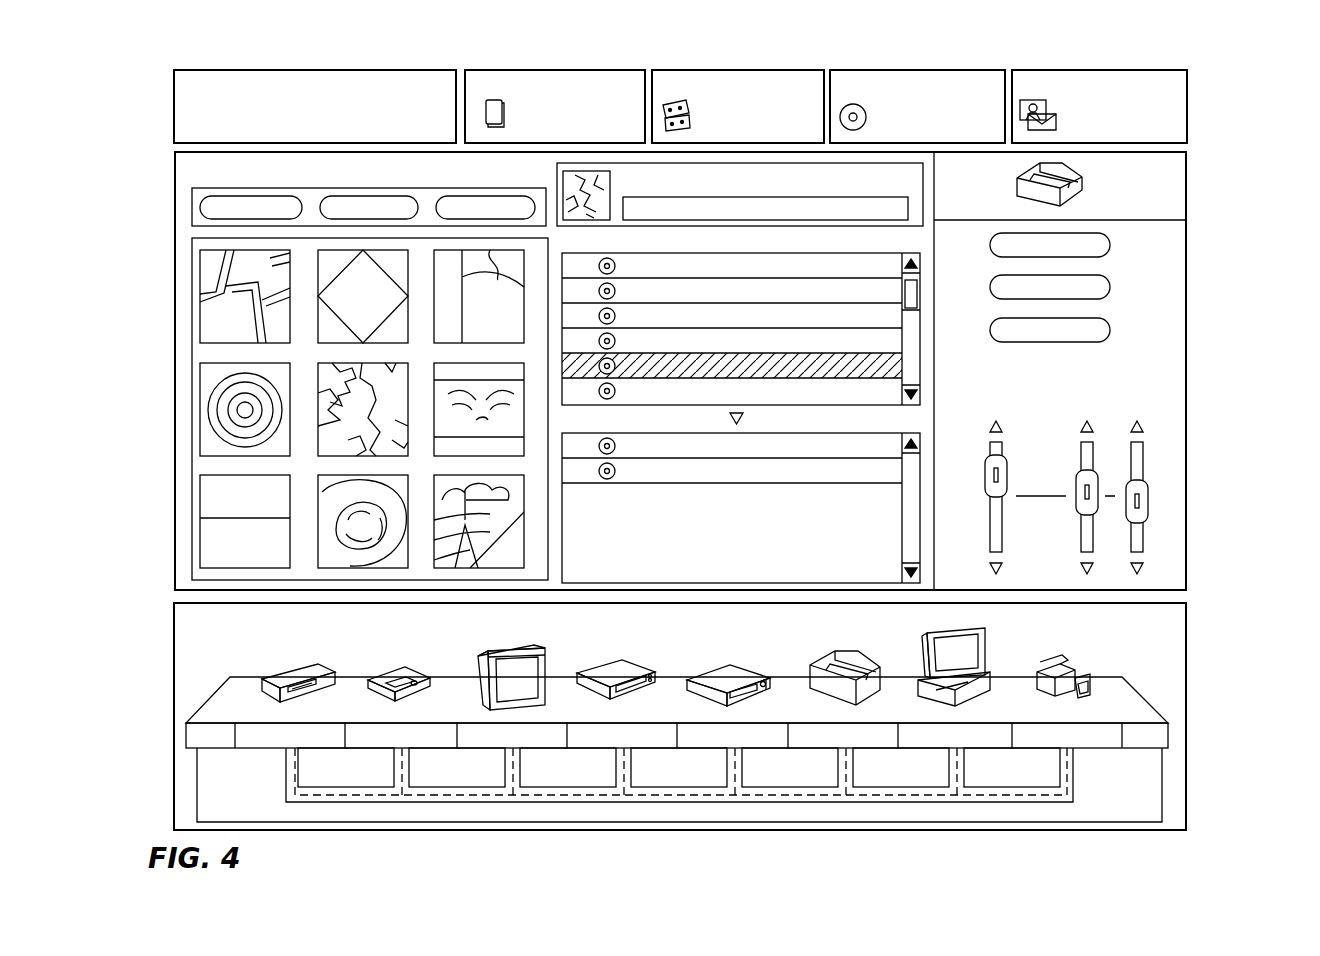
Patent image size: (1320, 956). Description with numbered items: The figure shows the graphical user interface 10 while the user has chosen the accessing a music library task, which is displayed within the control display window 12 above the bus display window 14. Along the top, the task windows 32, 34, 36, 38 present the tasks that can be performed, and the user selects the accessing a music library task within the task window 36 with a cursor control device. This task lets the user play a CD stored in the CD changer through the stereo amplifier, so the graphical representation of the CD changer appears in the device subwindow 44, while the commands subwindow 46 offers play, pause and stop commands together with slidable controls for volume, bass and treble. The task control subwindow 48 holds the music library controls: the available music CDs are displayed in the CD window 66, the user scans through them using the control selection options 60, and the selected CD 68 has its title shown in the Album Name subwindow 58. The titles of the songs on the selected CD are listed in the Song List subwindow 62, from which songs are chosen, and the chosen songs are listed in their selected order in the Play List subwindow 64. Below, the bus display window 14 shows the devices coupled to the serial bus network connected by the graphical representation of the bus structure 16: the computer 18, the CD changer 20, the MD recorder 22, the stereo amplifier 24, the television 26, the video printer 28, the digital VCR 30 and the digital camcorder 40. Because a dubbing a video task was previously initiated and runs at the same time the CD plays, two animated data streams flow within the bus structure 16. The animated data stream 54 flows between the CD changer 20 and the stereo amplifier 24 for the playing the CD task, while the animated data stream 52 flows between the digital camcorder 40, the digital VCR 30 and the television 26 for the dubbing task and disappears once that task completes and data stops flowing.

The graphical user interface 10 is at (1228, 132).
The control display window 12 is at (1187, 322).
The bus display window 14 is at (1148, 700).
The bus structure 16 is at (920, 803).
The computer 18 is at (990, 644).
The compact disk changer 20 is at (855, 660).
The magnetic disk recorder 22 is at (745, 666).
The stereo amplifier 24 is at (630, 660).
The television 26 is at (541, 660).
The video printer 28 is at (408, 668).
The digital video cassette recorder 30 is at (316, 666).
The task window 32 is at (556, 69).
The task window 34 is at (740, 69).
The task window 36 is at (922, 69).
The task window 38 is at (1092, 69).
The digital camcorder 40 is at (1070, 670).
The device subwindow 44 is at (1175, 187).
The commands subwindow 46 is at (1167, 448).
The task control subwindow 48 is at (172, 412).
The animated data stream 52 is at (1046, 800).
The animated data stream 54 is at (773, 796).
The Album Name subwindow 58 is at (558, 163).
The control selection options 60 is at (438, 188).
The Song List subwindow 62 is at (924, 358).
The Play List subwindow 64 is at (924, 524).
The CD window 66 is at (196, 516).
The CD 68 is at (330, 362).